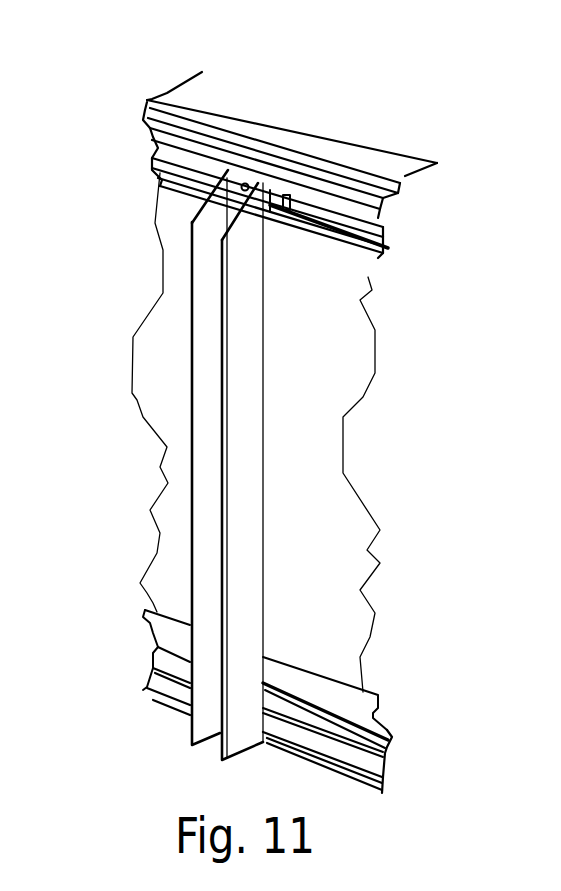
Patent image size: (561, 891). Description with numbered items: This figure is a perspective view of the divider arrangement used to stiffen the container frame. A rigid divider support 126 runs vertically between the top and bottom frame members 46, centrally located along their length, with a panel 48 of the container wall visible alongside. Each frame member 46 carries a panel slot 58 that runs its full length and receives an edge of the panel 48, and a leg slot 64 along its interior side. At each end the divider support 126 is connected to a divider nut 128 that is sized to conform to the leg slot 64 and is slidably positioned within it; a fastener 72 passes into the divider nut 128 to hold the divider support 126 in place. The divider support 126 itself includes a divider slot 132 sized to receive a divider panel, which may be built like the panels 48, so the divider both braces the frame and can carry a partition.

The frame member 46 is at (284, 100).
The panel 48 is at (328, 395).
The panel slot 58 is at (348, 193).
The leg slot 64 is at (383, 250).
The fastener 72 is at (243, 189).
The divider support 126 is at (245, 505).
The divider nut 128 is at (269, 210).
The divider slot 132 is at (205, 441).